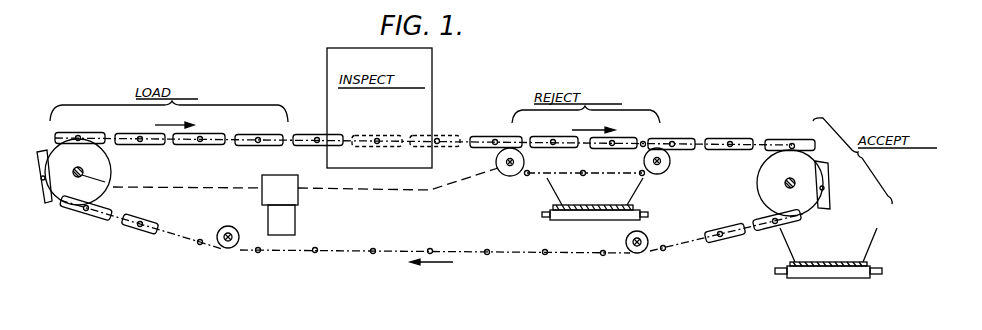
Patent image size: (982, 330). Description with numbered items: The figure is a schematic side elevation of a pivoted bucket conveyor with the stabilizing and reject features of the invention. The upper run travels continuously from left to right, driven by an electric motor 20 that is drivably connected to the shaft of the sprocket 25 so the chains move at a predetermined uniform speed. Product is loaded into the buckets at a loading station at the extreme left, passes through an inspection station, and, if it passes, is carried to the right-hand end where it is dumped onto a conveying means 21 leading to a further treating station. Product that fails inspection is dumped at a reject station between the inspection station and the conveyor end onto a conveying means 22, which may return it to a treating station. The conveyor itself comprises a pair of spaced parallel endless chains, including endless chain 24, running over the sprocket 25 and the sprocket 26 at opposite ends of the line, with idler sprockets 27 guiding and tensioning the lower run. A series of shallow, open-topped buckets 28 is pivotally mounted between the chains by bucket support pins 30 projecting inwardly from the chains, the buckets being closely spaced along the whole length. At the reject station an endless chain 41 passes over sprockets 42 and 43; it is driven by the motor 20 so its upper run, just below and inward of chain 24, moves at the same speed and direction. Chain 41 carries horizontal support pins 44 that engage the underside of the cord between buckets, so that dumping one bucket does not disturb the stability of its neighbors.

The electric motor 20 is at (295, 218).
The conveying means 21 is at (845, 278).
The conveying means 22 is at (593, 220).
The endless chain 24 is at (523, 253).
The sprocket 25 is at (112, 168).
The sprocket 26 is at (757, 183).
The idler sprocket 27 is at (228, 226).
The bucket 28 is at (113, 133).
The bucket support pin 30 is at (262, 144).
The endless chain 41 is at (540, 176).
The sprocket 42 is at (496, 162).
The sprocket 43 is at (671, 163).
The support pin 44 is at (525, 175).